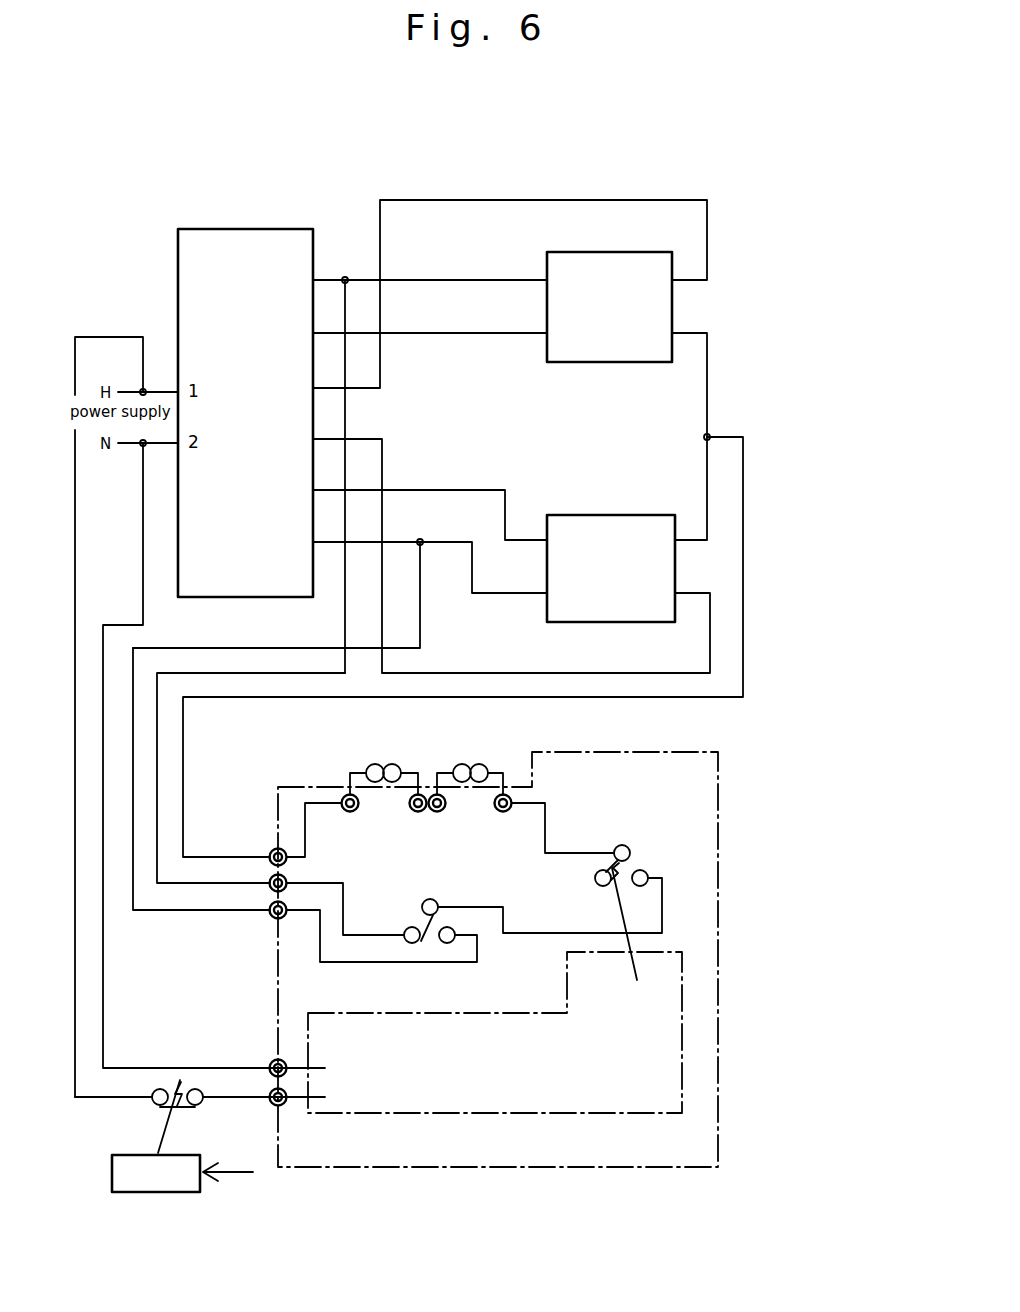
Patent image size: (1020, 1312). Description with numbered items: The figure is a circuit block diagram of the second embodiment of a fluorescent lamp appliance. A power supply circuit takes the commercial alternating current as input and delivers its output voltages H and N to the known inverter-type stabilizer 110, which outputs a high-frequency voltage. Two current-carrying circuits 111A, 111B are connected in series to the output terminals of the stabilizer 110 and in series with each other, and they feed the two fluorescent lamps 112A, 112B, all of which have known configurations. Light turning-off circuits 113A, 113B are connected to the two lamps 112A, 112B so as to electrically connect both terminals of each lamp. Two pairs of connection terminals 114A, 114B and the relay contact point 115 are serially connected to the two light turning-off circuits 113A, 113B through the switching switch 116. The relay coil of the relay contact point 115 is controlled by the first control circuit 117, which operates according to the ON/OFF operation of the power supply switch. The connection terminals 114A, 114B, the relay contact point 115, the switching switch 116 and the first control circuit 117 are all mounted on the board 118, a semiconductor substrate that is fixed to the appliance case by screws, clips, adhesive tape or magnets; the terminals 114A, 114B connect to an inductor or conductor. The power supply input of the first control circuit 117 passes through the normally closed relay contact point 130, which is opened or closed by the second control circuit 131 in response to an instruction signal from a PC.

The inverter-type stabilizer 110 is at (247, 228).
The current-carrying circuit 111A is at (442, 280).
The fluorescent lamp 112A is at (598, 252).
The light turning-off circuit 113A is at (348, 415).
The current-carrying circuit 111B is at (455, 540).
The fluorescent lamp 112B is at (675, 568).
The light turning-off circuit 113B is at (420, 637).
The pair of connection terminals 114A is at (350, 812).
The pair of connection terminals 114B is at (437, 812).
The relay contact point 115 is at (633, 863).
The switching switch 116 is at (452, 918).
The first control circuit 117 is at (553, 1113).
The board 118 is at (655, 1167).
The relay contact point 130 is at (163, 1107).
The second control circuit 131 is at (190, 1195).